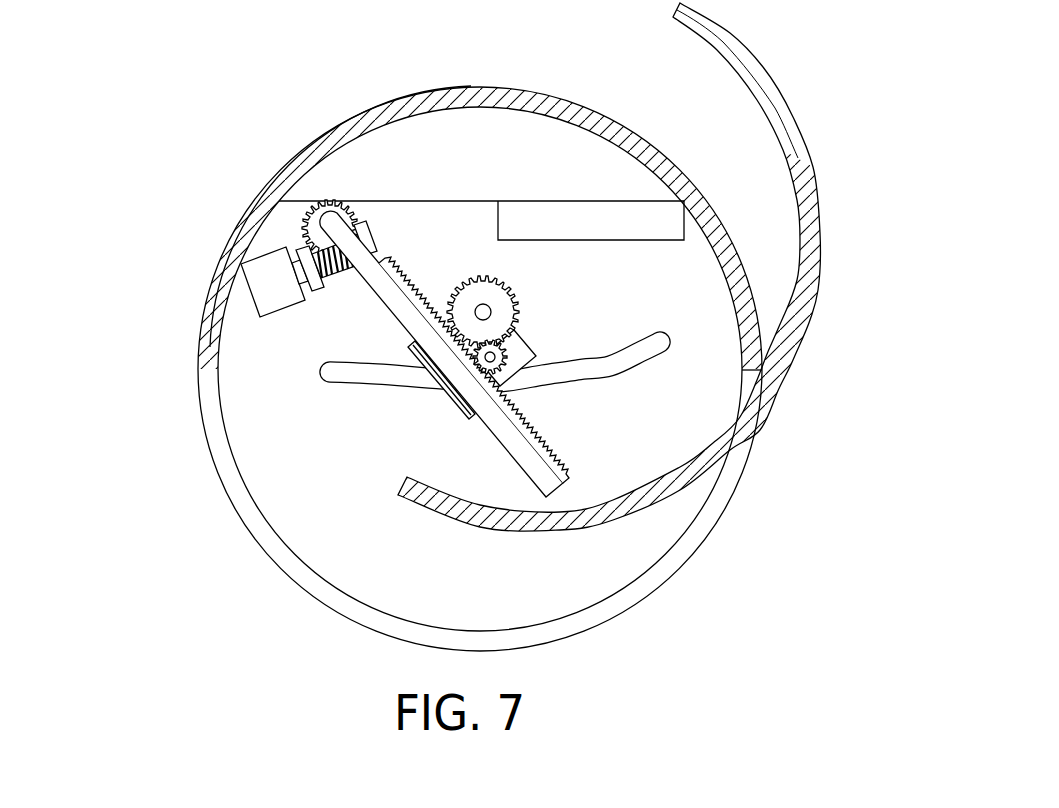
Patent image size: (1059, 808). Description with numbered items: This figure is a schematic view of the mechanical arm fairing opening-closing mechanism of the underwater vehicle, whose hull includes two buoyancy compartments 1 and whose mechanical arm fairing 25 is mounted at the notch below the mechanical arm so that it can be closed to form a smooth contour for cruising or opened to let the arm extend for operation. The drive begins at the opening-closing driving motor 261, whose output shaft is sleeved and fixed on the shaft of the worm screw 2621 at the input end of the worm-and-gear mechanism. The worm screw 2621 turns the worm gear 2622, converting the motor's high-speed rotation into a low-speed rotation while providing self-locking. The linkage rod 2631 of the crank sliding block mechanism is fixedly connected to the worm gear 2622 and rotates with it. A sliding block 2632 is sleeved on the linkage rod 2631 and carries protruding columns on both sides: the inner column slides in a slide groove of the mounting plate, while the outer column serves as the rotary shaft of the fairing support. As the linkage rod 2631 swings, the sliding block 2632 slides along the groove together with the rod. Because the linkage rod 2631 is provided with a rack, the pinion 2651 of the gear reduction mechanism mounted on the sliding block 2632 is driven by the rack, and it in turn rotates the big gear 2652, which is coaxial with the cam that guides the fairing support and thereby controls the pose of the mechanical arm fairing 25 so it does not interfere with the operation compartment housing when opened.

The buoyancy compartment 1 is at (208, 295).
The mechanical arm fairing 25 is at (668, 14).
The opening-closing driving motor 261 is at (303, 238).
The worm screw 2621 is at (268, 272).
The worm gear 2622 is at (316, 215).
The linkage rod 2631 is at (385, 298).
The sliding block 2632 is at (520, 358).
The pinion 2651 is at (497, 386).
The big gear 2652 is at (484, 300).